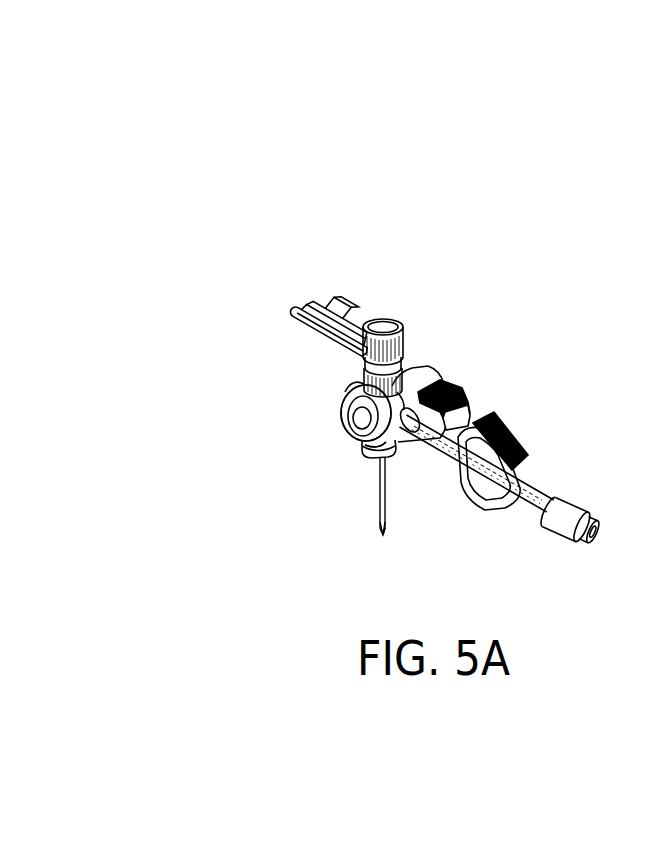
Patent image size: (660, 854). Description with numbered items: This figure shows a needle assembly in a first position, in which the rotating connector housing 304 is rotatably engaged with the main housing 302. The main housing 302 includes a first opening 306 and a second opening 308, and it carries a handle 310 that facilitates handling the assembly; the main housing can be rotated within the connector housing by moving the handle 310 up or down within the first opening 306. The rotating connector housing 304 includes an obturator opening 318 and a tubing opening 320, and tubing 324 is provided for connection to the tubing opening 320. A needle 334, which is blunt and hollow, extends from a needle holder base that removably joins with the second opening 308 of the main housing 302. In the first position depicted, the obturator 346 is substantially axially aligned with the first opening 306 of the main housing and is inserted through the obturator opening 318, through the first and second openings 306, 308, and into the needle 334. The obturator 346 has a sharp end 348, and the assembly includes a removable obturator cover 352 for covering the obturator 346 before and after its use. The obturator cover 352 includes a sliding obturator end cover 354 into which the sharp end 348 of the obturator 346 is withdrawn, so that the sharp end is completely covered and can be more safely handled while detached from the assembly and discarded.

The main housing 302 is at (361, 448).
The rotating connector housing 304 is at (420, 383).
The first opening 306 is at (343, 413).
The second opening 308 is at (378, 447).
The handle 310 is at (467, 412).
The obturator opening 318 is at (343, 413).
The tubing opening 320 is at (446, 383).
The tubing 324 is at (533, 487).
The needle 334 is at (379, 497).
The obturator 346 is at (386, 529).
The sharp end 348 is at (381, 530).
The obturator cover 352 is at (335, 303).
The sliding obturator end cover 354 is at (406, 356).